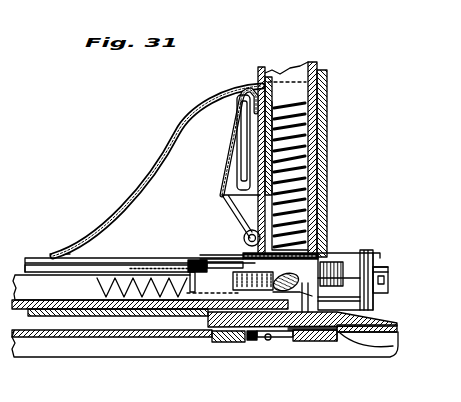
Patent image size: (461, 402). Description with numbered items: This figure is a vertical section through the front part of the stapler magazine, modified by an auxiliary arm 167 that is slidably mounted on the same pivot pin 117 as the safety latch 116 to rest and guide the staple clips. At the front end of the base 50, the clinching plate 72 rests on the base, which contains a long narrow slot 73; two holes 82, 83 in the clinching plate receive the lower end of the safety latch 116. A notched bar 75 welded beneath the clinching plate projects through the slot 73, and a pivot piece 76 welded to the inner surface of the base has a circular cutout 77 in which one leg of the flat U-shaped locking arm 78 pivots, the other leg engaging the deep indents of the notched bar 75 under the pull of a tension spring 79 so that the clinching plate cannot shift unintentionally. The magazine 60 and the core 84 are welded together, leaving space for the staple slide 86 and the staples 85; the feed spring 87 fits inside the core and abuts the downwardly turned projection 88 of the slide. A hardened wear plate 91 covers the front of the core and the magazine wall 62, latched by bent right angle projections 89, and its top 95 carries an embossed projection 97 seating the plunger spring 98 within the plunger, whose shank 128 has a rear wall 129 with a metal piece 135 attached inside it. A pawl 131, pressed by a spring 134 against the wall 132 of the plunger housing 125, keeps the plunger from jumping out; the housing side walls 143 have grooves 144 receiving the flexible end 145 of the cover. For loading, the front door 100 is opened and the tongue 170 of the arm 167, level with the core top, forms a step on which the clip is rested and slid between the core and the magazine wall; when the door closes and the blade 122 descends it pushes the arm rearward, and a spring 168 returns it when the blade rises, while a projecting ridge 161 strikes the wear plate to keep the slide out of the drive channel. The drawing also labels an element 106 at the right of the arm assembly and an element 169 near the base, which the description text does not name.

The base 50 is at (398, 328).
The magazine 60 is at (142, 317).
The magazine wall 62 is at (110, 262).
The clinching plate 72 is at (378, 317).
The slot 73 is at (393, 343).
The notched bar 75 is at (330, 341).
The pivot piece 76 is at (213, 340).
The circular cutout 77 is at (232, 340).
The locking arm 78 is at (297, 341).
The tension spring 79 is at (267, 341).
The hole 82 is at (343, 334).
The hole 83 is at (253, 340).
The core 84 is at (168, 315).
The staples 85 is at (375, 265).
The staple slide 86 is at (157, 263).
The feed spring 87 is at (92, 315).
The downwardly turned projection 88 is at (195, 268).
The bent right angle projections 89 is at (243, 256).
The wear plate 91 is at (342, 263).
The top of the wear plate 95 is at (243, 219).
The projection 97 is at (322, 246).
The plunger spring 98 is at (292, 100).
The front door 100 is at (374, 303).
The cap 106 is at (389, 279).
The safety latch 116 is at (283, 338).
The pivot pin 117 is at (205, 313).
The blade 122 is at (317, 72).
The plunger housing 125 is at (328, 160).
The plunger shank 128 is at (312, 63).
The rear wall of the plunger shank 129 is at (258, 75).
The pawl 131 is at (250, 127).
The wall of the plunger housing 132 is at (222, 195).
The spring 134 is at (234, 142).
The metal piece 135 is at (279, 82).
The side walls 143 is at (160, 187).
The grooves 144 is at (160, 154).
The flexible end 145 is at (172, 143).
The projecting ridge 161 is at (207, 262).
The auxiliary arm 167 is at (390, 268).
The spring 168 is at (374, 297).
The rod 169 is at (250, 337).
The tongue 170 is at (372, 253).